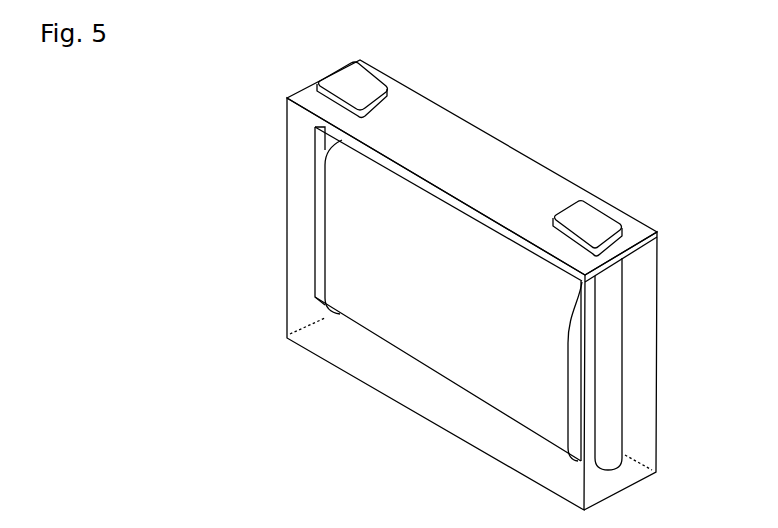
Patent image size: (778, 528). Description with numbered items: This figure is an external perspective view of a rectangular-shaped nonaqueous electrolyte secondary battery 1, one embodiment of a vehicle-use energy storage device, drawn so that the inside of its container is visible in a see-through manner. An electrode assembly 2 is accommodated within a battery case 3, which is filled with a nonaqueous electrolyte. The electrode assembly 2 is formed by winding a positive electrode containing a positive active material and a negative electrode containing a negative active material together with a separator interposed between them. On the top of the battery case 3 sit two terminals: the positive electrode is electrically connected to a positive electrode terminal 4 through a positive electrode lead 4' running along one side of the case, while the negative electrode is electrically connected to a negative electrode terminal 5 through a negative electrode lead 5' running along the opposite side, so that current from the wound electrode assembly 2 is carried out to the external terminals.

The nonaqueous electrolyte secondary battery 1 is at (568, 131).
The electrode assembly 2 is at (442, 301).
The battery case 3 is at (287, 181).
The positive electrode terminal 4 is at (352, 69).
The negative electrode terminal 5 is at (587, 206).
The positive electrode lead 4' is at (288, 216).
The negative electrode lead 5' is at (639, 364).